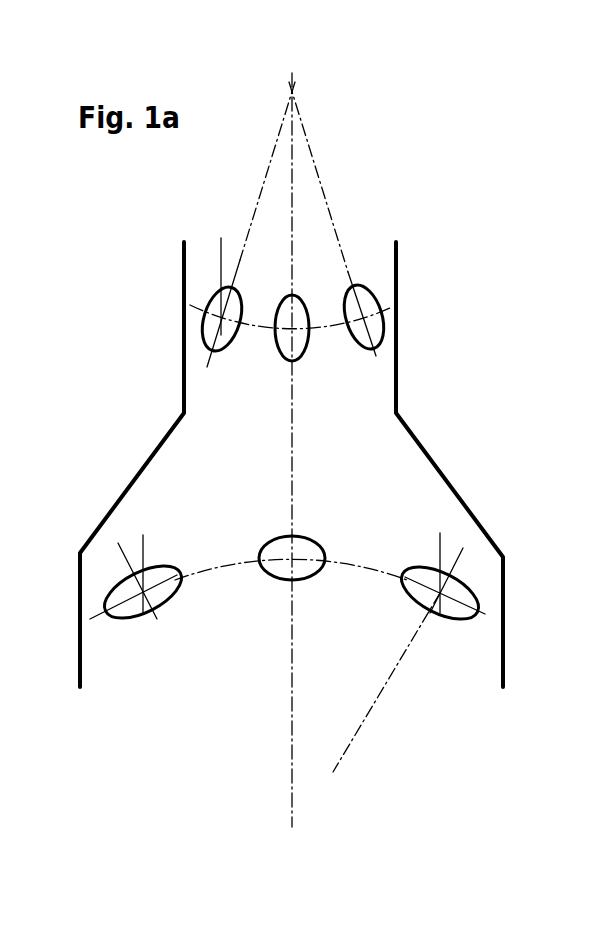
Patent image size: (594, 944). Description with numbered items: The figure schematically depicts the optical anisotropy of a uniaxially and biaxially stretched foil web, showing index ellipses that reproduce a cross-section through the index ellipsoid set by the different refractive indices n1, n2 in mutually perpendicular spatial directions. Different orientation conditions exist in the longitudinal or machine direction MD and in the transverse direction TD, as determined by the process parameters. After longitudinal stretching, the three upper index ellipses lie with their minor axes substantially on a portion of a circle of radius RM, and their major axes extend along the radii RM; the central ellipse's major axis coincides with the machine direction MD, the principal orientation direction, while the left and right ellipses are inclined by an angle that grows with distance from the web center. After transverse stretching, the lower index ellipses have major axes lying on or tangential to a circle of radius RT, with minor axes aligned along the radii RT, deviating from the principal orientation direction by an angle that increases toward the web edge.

The radius RM is at (291, 224).
The radius RT is at (386, 682).
The refractive index n1 is at (292, 328).
The refractive index n2 is at (292, 328).
The transverse direction TD is at (292, 558).
The machine direction MD is at (292, 558).